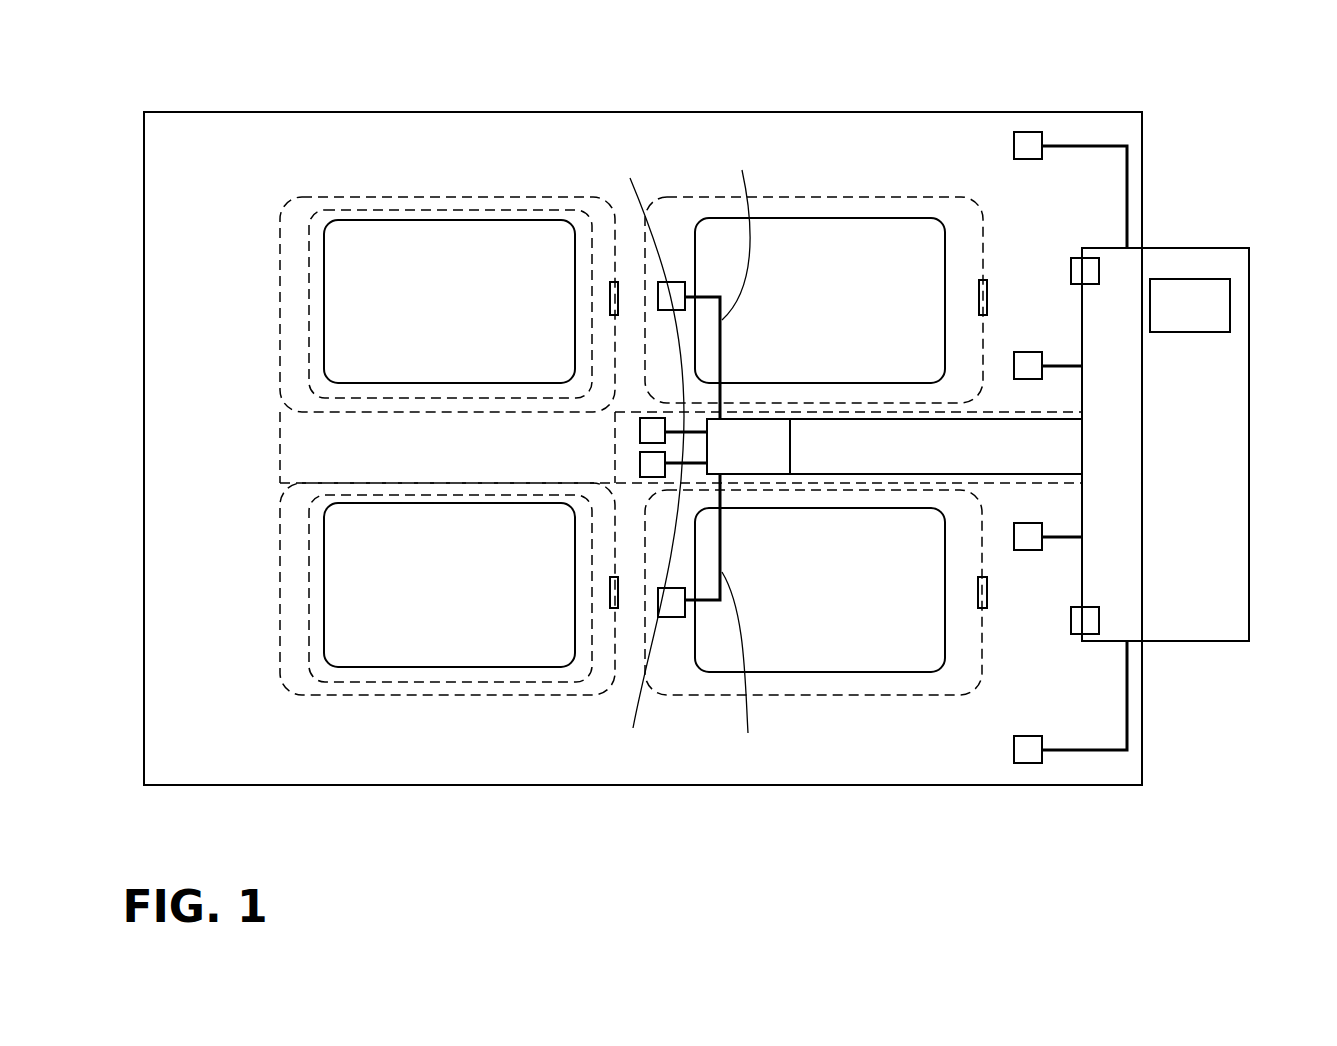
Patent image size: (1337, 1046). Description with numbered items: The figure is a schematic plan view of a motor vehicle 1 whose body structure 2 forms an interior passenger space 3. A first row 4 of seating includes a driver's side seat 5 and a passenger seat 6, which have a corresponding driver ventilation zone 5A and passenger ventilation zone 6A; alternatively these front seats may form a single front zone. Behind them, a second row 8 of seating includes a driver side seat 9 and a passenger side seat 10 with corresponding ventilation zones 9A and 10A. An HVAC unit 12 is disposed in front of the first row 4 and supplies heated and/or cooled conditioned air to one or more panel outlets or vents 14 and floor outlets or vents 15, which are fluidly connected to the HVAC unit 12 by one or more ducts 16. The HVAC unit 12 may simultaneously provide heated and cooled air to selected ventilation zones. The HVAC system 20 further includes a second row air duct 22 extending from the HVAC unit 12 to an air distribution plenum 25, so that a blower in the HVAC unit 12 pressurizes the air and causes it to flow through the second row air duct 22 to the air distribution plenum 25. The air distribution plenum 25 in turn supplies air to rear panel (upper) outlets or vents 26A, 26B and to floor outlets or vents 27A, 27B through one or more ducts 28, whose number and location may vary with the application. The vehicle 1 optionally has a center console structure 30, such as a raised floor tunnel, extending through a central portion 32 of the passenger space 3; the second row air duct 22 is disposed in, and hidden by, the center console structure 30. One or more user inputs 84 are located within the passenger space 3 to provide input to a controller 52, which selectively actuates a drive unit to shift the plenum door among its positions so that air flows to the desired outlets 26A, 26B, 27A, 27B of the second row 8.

The motor vehicle 1 is at (851, 69).
The body structure 2 is at (735, 112).
The interior passenger space 3 is at (163, 303).
The first row of seating 4 is at (773, 193).
The driver's side seat 5 is at (870, 218).
The driver ventilation zone 5A is at (818, 195).
The passenger seat 6 is at (902, 672).
The passenger ventilation zone 6A is at (868, 695).
The second row of seating 8 is at (285, 230).
The driver side seat 9 is at (383, 220).
The ventilation zone 9A is at (440, 197).
The passenger side seat 10 is at (372, 667).
The ventilation zone 10A is at (525, 682).
The HVAC unit 12 is at (1183, 248).
The panel outlets or vents 14 is at (1028, 132).
The floor outlets or vents 15 is at (1085, 258).
The ducts 16 is at (1090, 146).
The HVAC system 20 is at (1159, 195).
The second row air duct 22 is at (1040, 482).
The air distribution plenum 25 is at (763, 474).
The rear panel outlet or vent 26A is at (640, 430).
The rear panel outlet or vent 26B is at (640, 462).
The floor outlet or vent 27A is at (672, 282).
The floor outlet or vent 27B is at (668, 617).
The ducts 28 is at (692, 448).
The center console structure 30 is at (293, 395).
The central portion 32 is at (273, 450).
The controller 52 is at (1205, 279).
The user inputs 84 is at (614, 282).